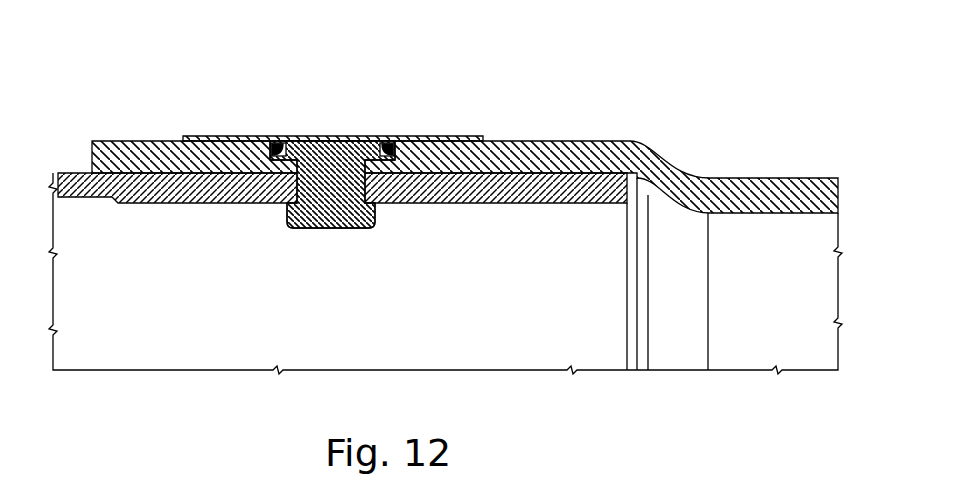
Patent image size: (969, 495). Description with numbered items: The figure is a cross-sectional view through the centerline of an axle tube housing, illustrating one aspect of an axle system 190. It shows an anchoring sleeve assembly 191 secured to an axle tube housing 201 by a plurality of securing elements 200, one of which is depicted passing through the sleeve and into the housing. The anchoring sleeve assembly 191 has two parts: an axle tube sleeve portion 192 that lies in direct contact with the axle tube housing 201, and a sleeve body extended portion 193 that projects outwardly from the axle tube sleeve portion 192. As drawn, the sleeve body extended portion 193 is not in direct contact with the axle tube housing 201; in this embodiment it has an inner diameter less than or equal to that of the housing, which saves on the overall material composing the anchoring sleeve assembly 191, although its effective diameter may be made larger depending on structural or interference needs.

The axle system 190 is at (782, 87).
The anchoring sleeve assembly 191 is at (442, 125).
The axle tube sleeve portion 192 is at (543, 140).
The sleeve body extended portion 193 is at (755, 178).
The securing element 200 is at (332, 138).
The axle tube housing 201 is at (165, 205).